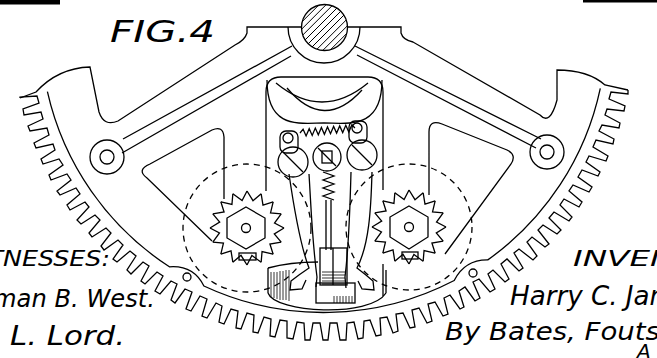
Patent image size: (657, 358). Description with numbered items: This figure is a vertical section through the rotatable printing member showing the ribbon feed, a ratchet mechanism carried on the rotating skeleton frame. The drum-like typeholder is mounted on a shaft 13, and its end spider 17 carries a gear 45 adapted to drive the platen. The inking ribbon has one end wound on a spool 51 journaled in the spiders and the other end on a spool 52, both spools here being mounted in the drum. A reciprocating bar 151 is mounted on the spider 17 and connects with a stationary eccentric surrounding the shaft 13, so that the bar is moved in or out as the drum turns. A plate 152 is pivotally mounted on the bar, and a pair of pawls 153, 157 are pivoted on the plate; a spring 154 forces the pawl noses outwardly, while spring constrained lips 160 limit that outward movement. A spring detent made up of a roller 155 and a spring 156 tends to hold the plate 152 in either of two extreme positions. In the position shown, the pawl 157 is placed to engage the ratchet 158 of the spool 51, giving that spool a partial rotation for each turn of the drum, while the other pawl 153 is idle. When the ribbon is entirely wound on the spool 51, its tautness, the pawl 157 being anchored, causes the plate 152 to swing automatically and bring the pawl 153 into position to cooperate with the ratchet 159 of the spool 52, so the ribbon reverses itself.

The shaft 13 is at (343, 13).
The spider 17 is at (461, 83).
The gear 45 is at (586, 211).
The spool 51 is at (458, 185).
The spool 52 is at (201, 185).
The reciprocating bar 151 is at (284, 103).
The plate 152 is at (282, 143).
The pawl 153 is at (307, 233).
The spring 154 is at (334, 129).
The roller 155 is at (386, 276).
The spring 156 is at (376, 200).
The pawl 157 is at (337, 183).
The ratchet 158 is at (440, 224).
The ratchet 159 is at (254, 214).
The spring constrained lips 160 is at (387, 163).